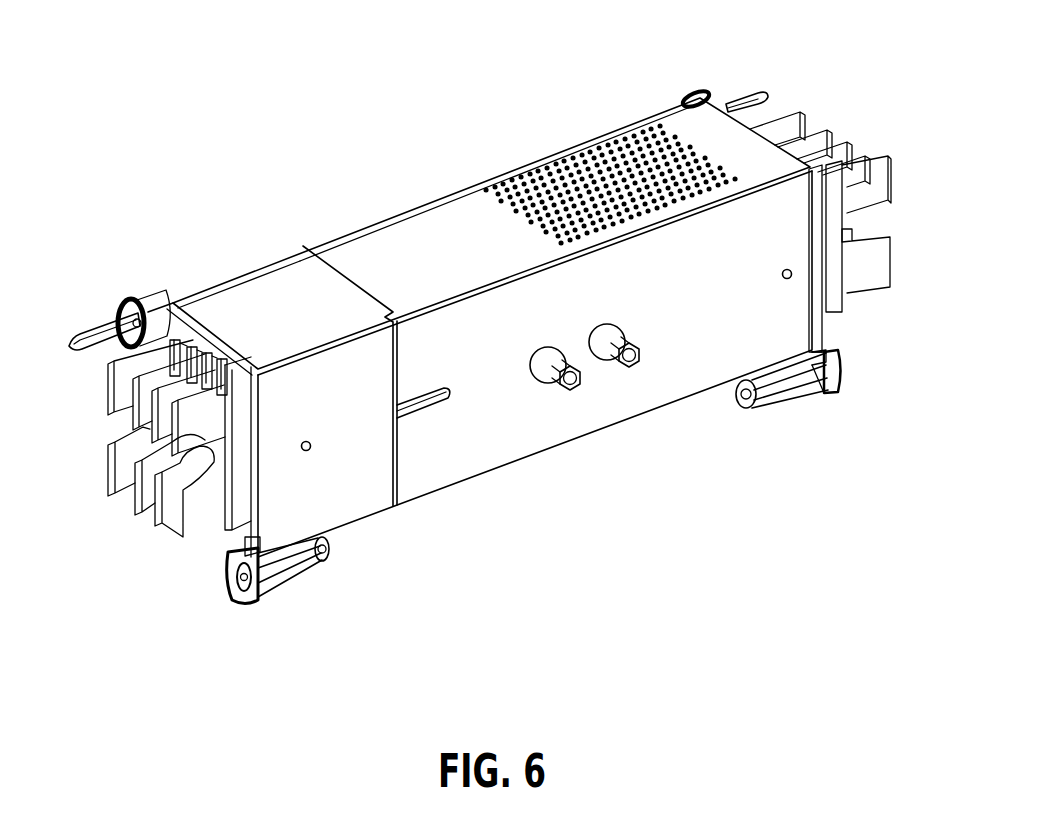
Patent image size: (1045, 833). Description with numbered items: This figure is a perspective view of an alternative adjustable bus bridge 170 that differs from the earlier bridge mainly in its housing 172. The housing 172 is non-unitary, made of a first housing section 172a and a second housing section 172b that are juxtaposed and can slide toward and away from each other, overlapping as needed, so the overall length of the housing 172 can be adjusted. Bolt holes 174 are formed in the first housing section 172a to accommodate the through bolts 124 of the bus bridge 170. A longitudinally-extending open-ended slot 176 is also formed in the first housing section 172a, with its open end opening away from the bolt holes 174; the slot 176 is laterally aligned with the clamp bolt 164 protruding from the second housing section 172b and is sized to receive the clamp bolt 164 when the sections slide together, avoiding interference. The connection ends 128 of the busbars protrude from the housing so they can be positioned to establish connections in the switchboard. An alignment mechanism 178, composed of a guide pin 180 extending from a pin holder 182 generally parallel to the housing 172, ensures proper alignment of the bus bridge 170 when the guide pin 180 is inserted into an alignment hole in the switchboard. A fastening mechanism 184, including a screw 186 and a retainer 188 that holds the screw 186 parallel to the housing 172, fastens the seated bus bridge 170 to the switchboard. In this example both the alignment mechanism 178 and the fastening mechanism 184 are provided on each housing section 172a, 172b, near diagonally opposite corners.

The adjustable bus bridge 170 is at (160, 165).
The housing 172 is at (386, 205).
The first housing section 172a is at (538, 157).
The second housing section 172b is at (264, 262).
The bolt holes 174 is at (565, 332).
The through bolts 124 is at (584, 400).
The open-ended slot 176 is at (422, 425).
The alignment mechanism 178 is at (120, 270).
The guide pin 180 is at (98, 328).
The pin holder 182 is at (142, 297).
The connection ends 128 is at (106, 470).
The clamp bolt 164 is at (311, 449).
The fastening mechanism 184 is at (268, 610).
The screw 186 is at (326, 556).
The retainer 188 is at (300, 586).